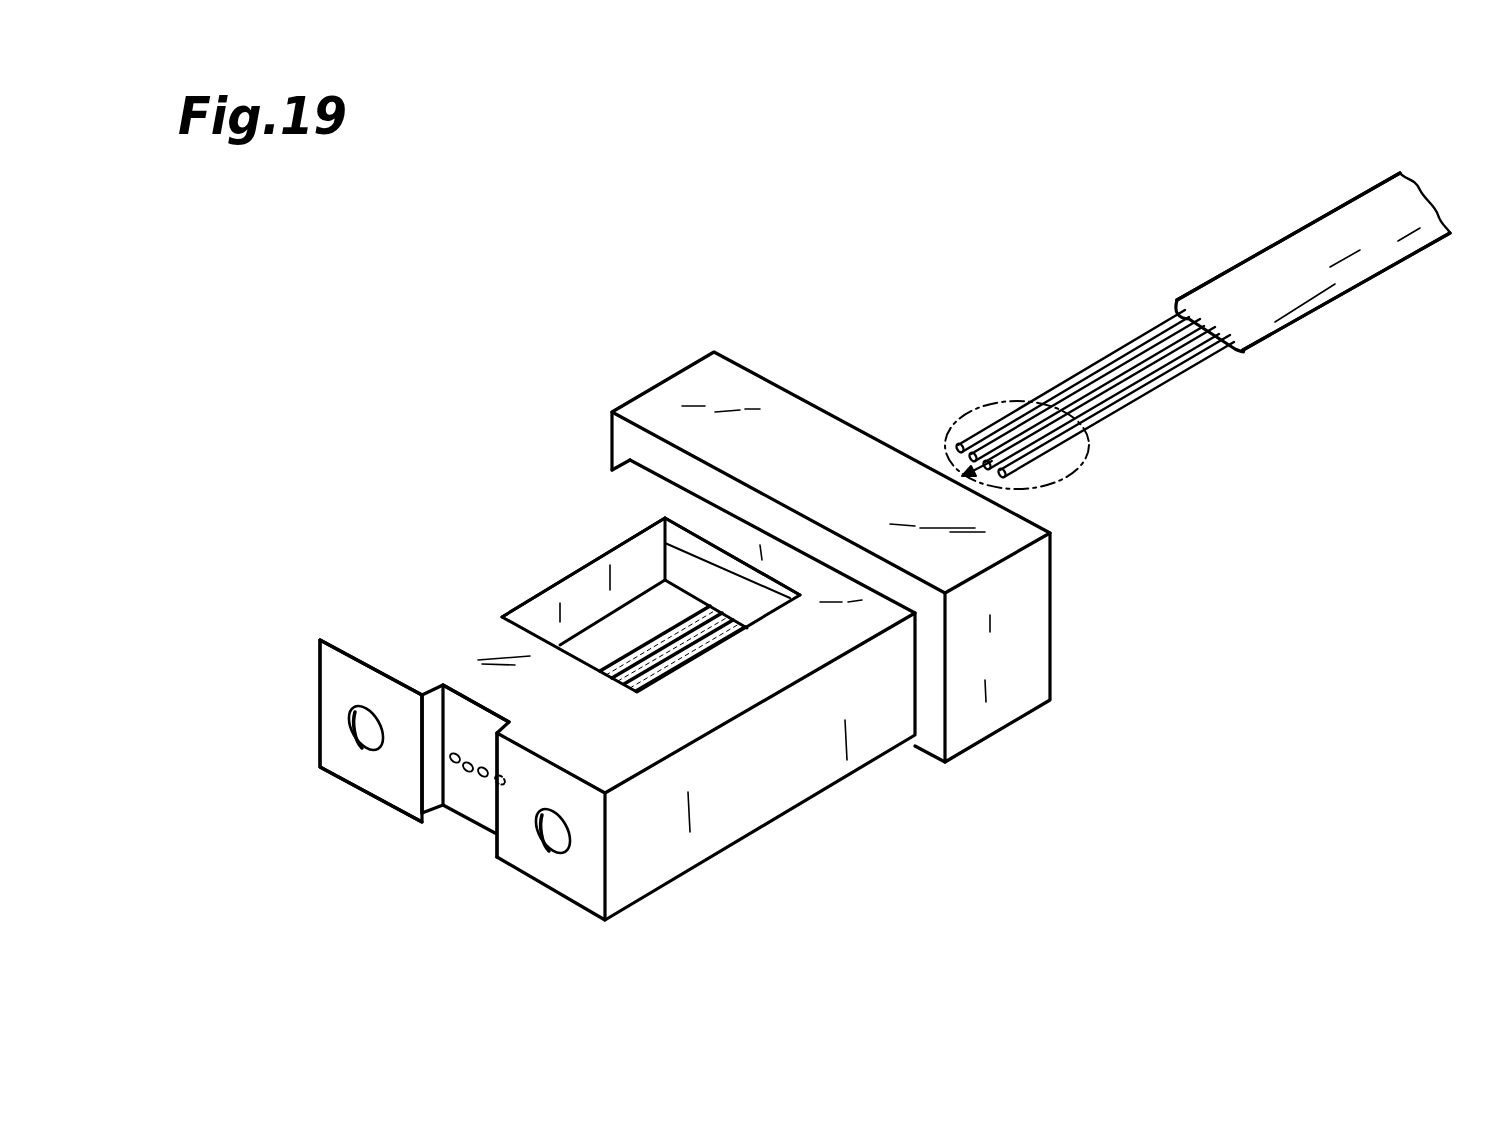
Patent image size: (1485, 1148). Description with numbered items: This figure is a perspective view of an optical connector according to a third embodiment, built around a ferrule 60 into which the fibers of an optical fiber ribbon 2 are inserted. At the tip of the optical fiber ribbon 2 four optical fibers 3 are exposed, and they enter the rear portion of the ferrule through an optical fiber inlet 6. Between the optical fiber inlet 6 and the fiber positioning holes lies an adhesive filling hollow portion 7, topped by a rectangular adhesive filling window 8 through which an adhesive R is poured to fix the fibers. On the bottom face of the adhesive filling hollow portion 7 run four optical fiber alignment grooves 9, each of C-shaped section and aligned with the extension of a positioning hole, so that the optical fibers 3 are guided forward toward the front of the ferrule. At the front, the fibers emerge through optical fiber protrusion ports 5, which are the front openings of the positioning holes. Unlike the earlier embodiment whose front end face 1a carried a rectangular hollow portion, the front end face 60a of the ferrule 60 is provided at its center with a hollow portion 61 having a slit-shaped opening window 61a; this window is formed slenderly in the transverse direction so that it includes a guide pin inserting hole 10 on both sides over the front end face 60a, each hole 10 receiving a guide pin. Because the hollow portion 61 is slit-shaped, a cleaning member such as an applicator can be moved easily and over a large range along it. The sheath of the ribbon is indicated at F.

The optical fiber ribbon 2 is at (1320, 217).
The ferrule 60 is at (779, 388).
The front end face 60a is at (357, 688).
The front end face 1a is at (410, 710).
The guide pin inserting hole 10 is at (347, 725).
The hollow portion 61 is at (453, 728).
The slit-shaped opening window 61a is at (493, 815).
The optical fiber protrusion port 5 is at (498, 786).
The adhesive filling hollow portion 7 is at (597, 583).
The adhesive filling window 8 is at (533, 597).
The optical fiber alignment groove 9 is at (667, 627).
The optical fiber inlet 6 is at (739, 600).
The optical fiber 3 is at (1130, 403).
The adhesive R is at (968, 410).
The cord sheath F is at (1343, 263).